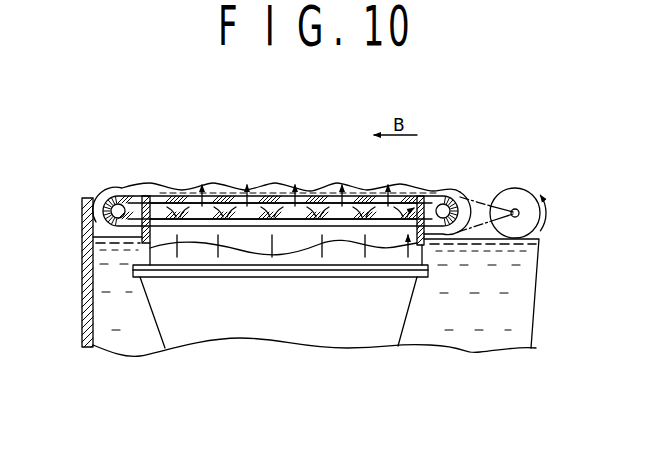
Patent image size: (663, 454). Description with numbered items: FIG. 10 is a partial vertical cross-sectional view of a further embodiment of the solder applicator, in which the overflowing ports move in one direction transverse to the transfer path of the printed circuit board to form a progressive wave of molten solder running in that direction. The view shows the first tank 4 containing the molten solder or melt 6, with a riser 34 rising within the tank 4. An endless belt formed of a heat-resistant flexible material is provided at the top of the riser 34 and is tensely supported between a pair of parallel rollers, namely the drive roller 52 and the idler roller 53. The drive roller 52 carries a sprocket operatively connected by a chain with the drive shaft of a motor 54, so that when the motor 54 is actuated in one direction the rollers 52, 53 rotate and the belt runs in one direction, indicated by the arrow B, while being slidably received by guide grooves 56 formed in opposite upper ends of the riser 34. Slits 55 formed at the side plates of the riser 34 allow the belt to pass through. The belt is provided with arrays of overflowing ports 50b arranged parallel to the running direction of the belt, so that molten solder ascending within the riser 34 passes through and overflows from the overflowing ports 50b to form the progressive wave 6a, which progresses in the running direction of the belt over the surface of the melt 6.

The first tank 4 is at (85, 316).
The melt 6 is at (505, 325).
The progressive wave 6a is at (347, 183).
The riser 34 is at (246, 262).
The overflowing ports 50b is at (303, 196).
The drive roller 52 is at (446, 196).
The idler roller 53 is at (113, 207).
The motor 54 is at (520, 198).
The slits 55 is at (153, 243).
The guide grooves 56 is at (151, 196).